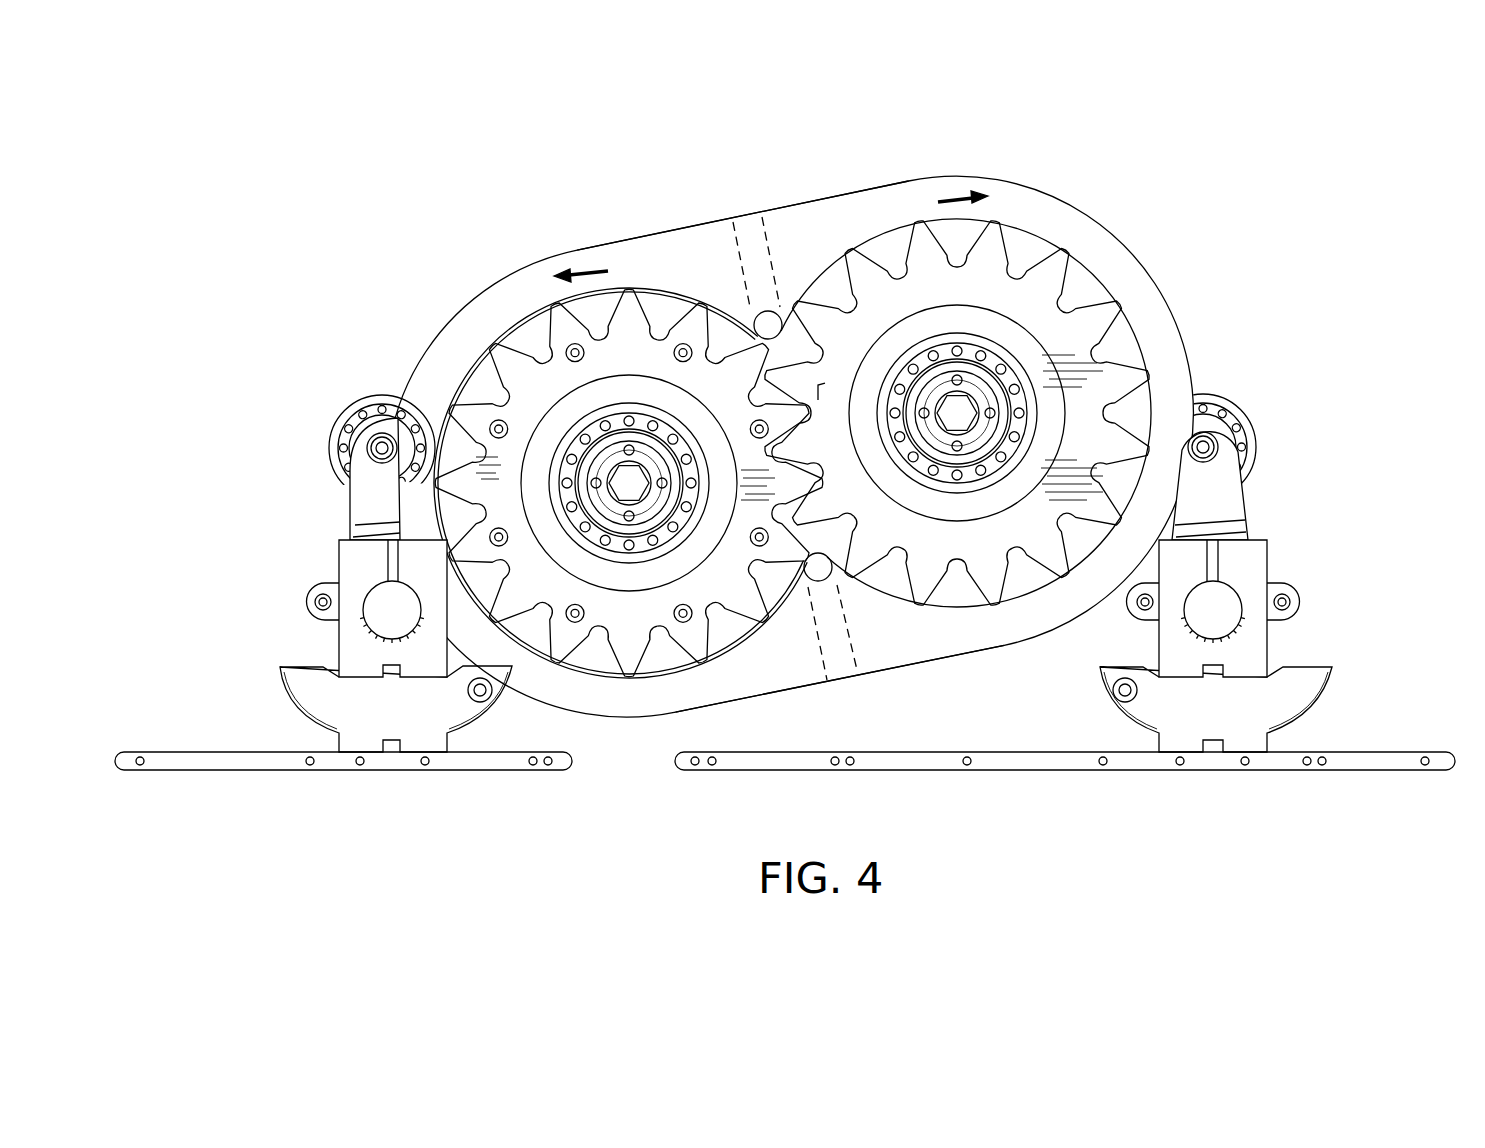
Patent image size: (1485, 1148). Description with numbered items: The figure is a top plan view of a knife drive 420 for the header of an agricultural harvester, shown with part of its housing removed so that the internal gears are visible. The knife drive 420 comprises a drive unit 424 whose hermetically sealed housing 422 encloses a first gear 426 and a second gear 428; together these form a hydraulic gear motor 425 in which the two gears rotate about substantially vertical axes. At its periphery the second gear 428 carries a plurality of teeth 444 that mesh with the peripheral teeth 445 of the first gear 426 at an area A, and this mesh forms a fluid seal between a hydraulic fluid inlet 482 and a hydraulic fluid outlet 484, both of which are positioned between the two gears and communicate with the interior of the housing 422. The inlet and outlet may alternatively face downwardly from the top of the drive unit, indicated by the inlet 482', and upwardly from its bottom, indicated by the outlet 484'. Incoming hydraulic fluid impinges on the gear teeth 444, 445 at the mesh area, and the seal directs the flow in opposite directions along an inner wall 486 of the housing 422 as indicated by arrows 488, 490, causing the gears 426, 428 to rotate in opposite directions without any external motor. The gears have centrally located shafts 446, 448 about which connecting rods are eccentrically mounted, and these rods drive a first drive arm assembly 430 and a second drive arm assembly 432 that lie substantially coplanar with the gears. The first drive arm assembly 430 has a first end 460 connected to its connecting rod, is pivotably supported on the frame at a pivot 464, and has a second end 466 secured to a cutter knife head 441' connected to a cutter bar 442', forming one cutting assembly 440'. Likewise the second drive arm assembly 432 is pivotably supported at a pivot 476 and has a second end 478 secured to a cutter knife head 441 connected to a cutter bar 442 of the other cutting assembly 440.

The knife drive 420 is at (266, 230).
The housing 422 is at (1138, 262).
The drive unit 424 is at (741, 208).
The hydraulic gear motor 425 is at (800, 280).
The first gear 426 is at (715, 607).
The second gear 428 is at (1018, 243).
The first drive arm assembly 430 is at (1269, 522).
The second drive arm assembly 432 is at (327, 508).
The cutting assembly 440 is at (343, 620).
The cutting assembly 440' is at (1065, 619).
The cutter knife head 441 is at (352, 709).
The cutter knife head 441' is at (1252, 709).
The cutter bar 442 is at (343, 798).
The cutter bar 442' is at (1065, 798).
The teeth 444 is at (1093, 312).
The peripheral teeth 445 is at (507, 360).
The shaft 446 is at (629, 483).
The shaft 448 is at (960, 445).
The first end 460 is at (1256, 458).
The pivot 464 is at (1232, 592).
The second end 466 is at (1268, 656).
The pivot 476 is at (386, 588).
The second end 478 is at (338, 655).
The hydraulic fluid inlet 482 is at (638, 211).
The hydraulic fluid inlet 482' is at (772, 204).
The hydraulic fluid outlet 484 is at (852, 631).
The hydraulic fluid outlet 484' is at (841, 665).
The inner wall 486 is at (1030, 578).
The arrow 488 is at (912, 200).
The arrow 490 is at (598, 268).